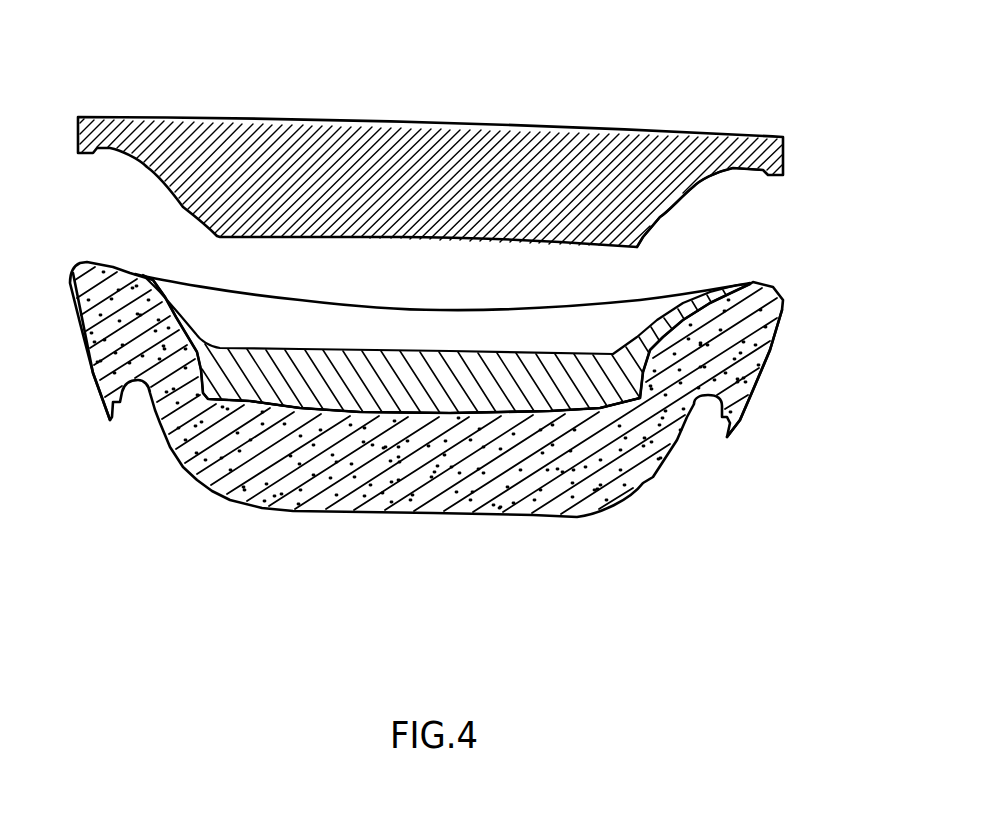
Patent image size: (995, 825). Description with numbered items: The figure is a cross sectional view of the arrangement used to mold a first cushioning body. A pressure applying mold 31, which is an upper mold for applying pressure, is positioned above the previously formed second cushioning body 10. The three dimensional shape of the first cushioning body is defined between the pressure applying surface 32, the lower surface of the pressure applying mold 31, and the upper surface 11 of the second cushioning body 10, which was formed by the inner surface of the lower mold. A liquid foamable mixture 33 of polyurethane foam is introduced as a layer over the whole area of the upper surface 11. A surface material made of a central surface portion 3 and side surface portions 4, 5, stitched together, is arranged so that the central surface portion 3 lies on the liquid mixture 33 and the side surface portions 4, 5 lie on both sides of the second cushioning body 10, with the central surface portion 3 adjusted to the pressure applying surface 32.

The pressure applying mold 31 is at (403, 122).
The pressure applying surface 32 is at (678, 200).
The central surface portion 3 is at (402, 306).
The second cushioning body 10 is at (433, 513).
The liquid foamable mixture 33 is at (512, 388).
The upper surface 11 is at (333, 404).
The side surface portion 5 is at (97, 377).
The side surface portion 4 is at (763, 357).